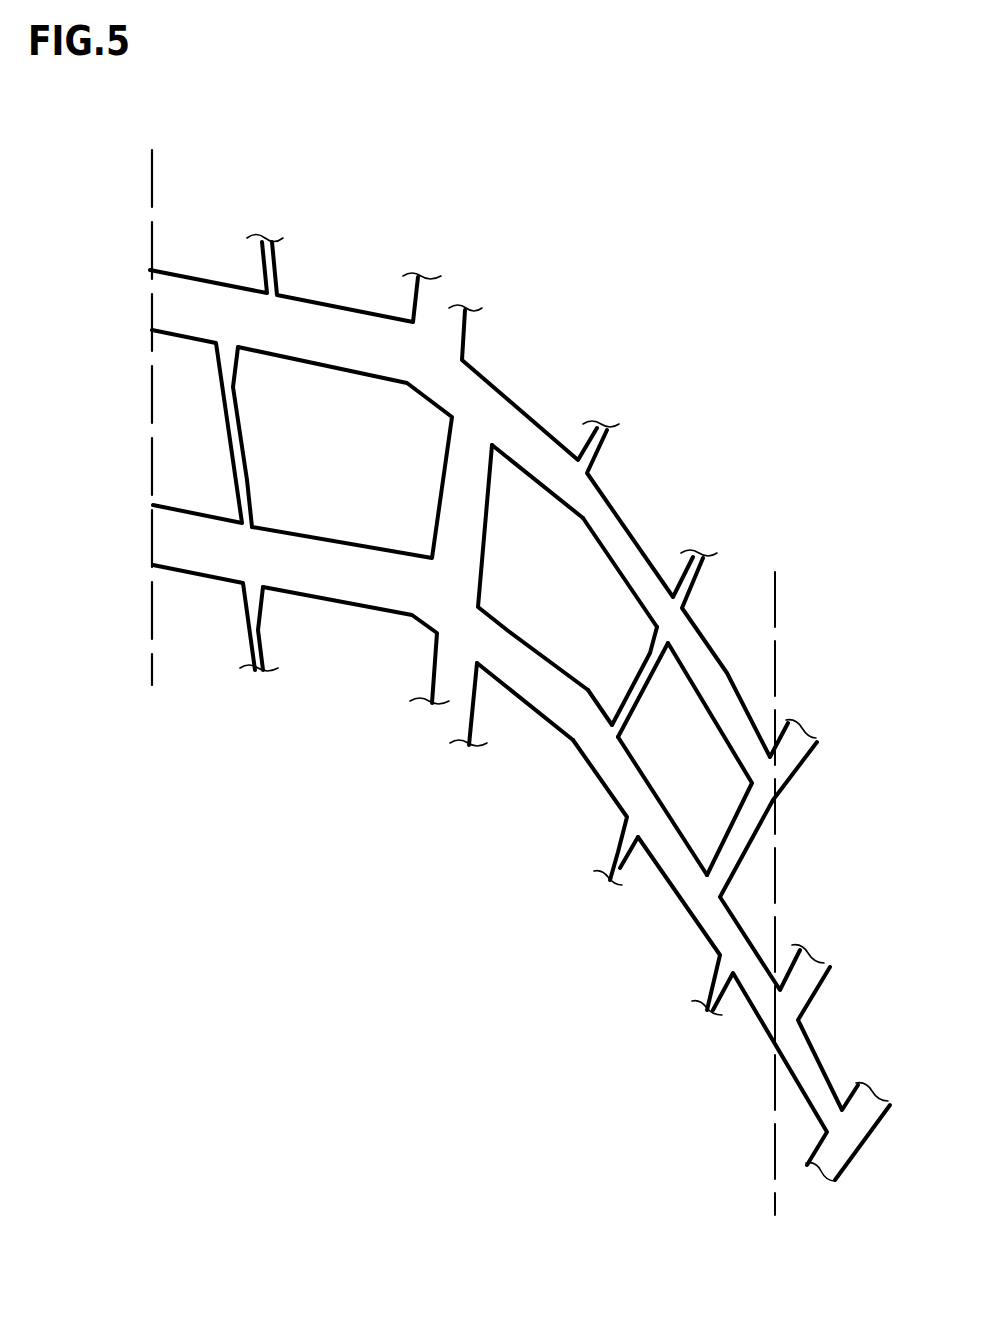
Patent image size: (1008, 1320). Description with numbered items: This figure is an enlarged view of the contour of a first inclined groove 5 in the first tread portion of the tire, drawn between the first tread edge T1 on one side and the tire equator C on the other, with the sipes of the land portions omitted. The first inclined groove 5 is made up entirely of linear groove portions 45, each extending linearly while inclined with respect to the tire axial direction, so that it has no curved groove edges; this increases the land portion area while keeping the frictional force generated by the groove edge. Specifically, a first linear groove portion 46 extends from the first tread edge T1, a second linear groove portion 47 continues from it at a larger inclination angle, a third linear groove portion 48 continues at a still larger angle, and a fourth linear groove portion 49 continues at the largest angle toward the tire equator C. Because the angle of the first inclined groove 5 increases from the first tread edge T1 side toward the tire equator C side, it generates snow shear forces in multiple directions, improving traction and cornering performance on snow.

The first inclined groove 5 is at (558, 477).
The linear groove portion 45 is at (218, 547).
The first linear groove portion 46 is at (333, 335).
The second linear groove portion 47 is at (525, 448).
The third linear groove portion 48 is at (623, 555).
The fourth linear groove portion 49 is at (740, 737).
The first tread edge T1 is at (150, 401).
The tire equator C is at (773, 875).